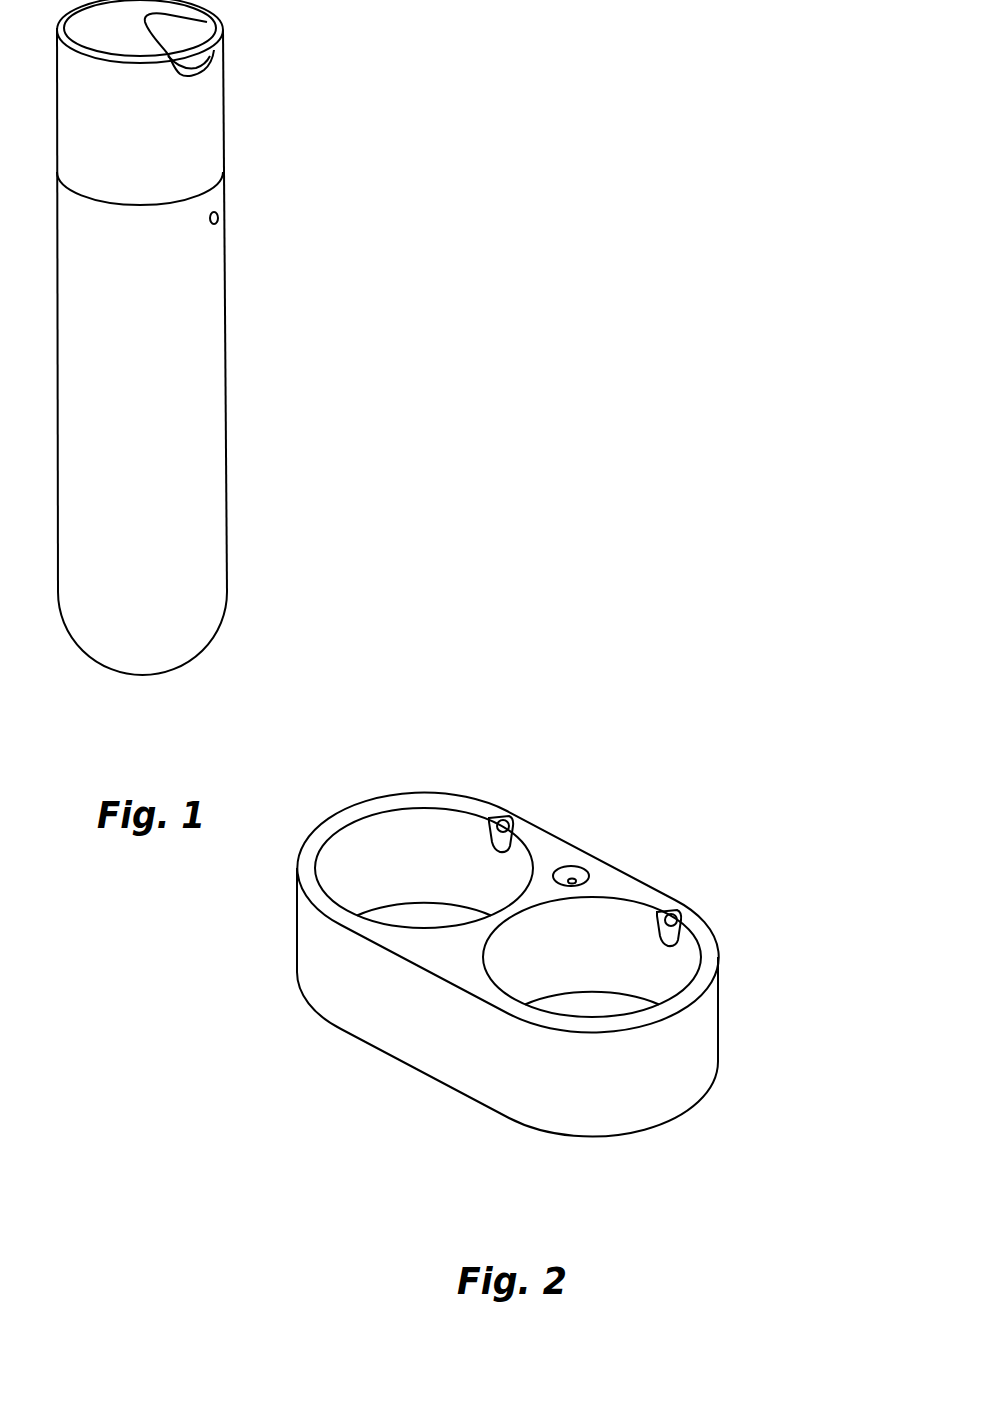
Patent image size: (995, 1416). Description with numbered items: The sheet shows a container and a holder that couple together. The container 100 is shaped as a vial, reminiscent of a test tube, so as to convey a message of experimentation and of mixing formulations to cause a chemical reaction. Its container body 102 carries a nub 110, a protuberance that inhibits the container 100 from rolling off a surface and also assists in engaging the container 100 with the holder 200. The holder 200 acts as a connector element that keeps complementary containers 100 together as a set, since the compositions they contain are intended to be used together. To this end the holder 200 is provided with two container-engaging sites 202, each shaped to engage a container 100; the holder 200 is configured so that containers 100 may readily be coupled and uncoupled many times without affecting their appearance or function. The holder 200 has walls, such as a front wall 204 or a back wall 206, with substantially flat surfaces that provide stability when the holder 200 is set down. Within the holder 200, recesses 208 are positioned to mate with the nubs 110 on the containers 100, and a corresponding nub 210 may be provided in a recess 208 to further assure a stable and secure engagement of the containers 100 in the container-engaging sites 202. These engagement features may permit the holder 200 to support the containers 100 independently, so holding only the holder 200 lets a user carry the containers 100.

In FIG. 1, the container 100 is at (383, 0).
In FIG. 1, the container body 102 is at (228, 412).
In FIG. 1, the nub 110 is at (224, 219).
In FIG. 2, the holder 200 is at (538, 918).
In FIG. 2, the container-engaging site 202 is at (437, 847).
In FIG. 2, the front wall 204 is at (440, 1048).
In FIG. 2, the back wall 206 is at (560, 838).
In FIG. 2, the recess 208 is at (492, 814).
In FIG. 2, the nub 210 is at (510, 824).